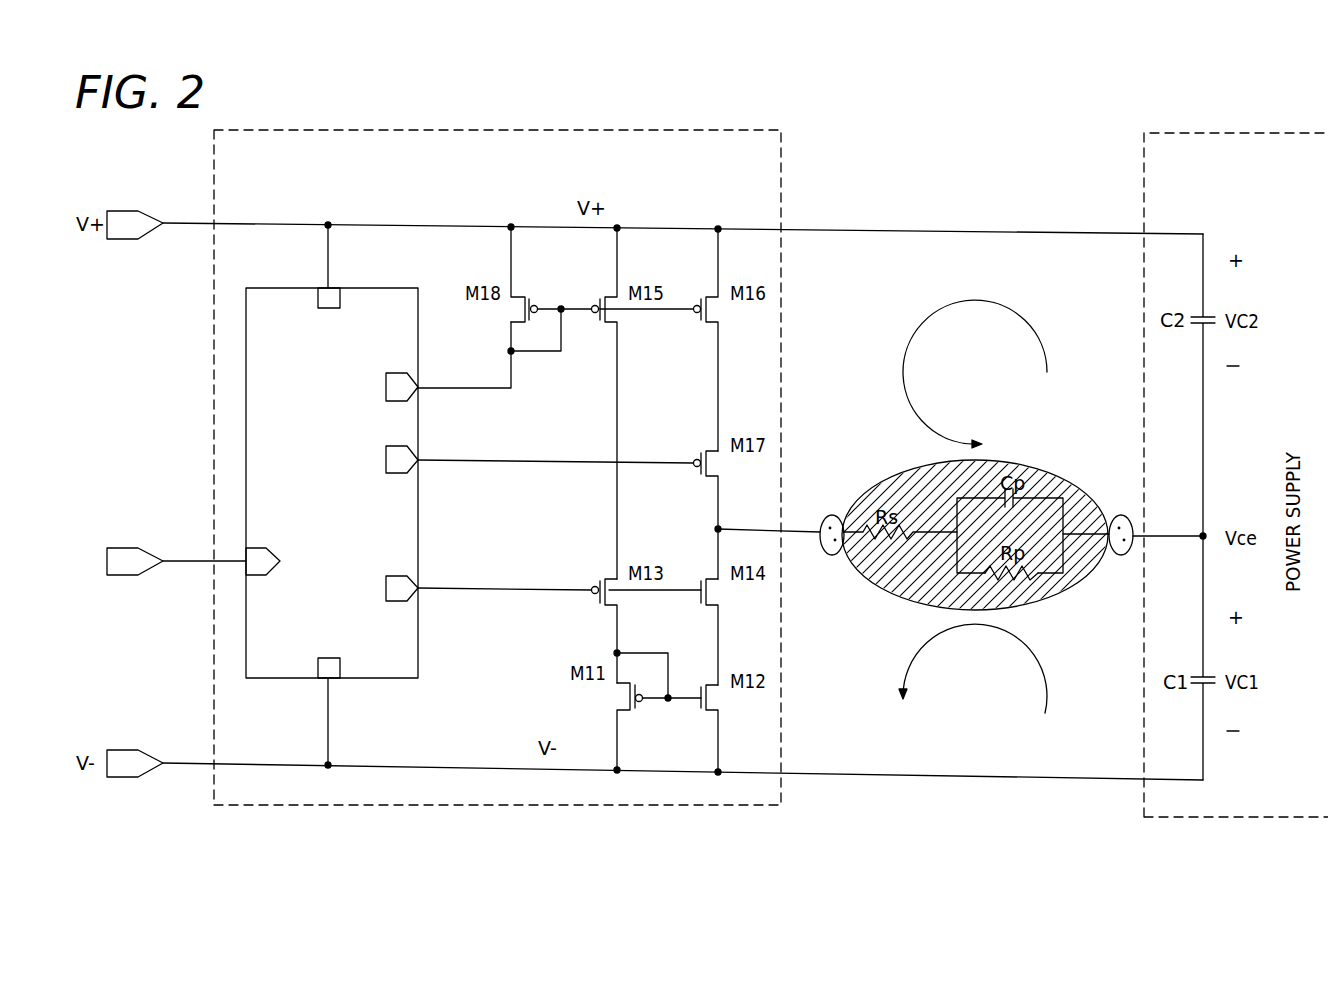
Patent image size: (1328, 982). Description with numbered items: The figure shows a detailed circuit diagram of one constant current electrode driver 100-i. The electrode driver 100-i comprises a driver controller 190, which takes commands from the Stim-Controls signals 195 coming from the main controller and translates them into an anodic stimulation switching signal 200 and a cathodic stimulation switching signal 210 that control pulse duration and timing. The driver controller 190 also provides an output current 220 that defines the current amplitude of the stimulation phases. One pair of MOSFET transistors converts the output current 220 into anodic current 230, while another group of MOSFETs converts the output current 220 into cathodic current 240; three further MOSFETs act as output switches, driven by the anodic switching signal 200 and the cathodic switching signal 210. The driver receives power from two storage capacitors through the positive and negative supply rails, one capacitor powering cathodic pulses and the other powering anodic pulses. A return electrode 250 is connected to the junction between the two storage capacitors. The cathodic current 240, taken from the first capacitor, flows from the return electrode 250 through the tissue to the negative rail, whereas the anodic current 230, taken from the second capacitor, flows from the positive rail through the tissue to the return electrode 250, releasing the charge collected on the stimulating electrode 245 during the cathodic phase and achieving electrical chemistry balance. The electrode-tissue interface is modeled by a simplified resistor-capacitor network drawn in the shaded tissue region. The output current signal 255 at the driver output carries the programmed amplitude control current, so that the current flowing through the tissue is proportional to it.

The electrode driver 100-i is at (355, 803).
The driver controller 190 is at (333, 474).
The Stim-Controls signals 195 is at (190, 563).
The anodic stimulation switching signal 200 is at (460, 462).
The cathodic stimulation switching signal 210 is at (470, 590).
The output current 220 is at (440, 388).
The anodic current 230 is at (1037, 331).
The cathodic current 240 is at (1045, 683).
The stimulating electrode 245 is at (843, 553).
The return electrode 250 is at (1122, 556).
The output current signal 255 is at (795, 533).